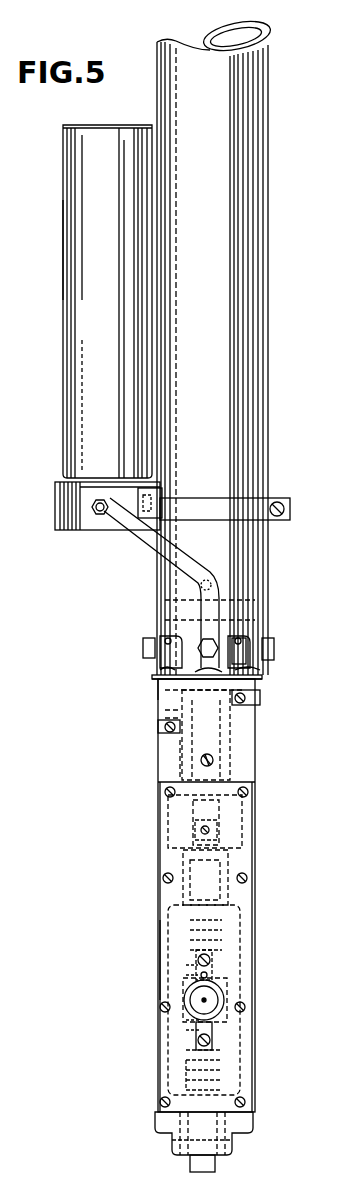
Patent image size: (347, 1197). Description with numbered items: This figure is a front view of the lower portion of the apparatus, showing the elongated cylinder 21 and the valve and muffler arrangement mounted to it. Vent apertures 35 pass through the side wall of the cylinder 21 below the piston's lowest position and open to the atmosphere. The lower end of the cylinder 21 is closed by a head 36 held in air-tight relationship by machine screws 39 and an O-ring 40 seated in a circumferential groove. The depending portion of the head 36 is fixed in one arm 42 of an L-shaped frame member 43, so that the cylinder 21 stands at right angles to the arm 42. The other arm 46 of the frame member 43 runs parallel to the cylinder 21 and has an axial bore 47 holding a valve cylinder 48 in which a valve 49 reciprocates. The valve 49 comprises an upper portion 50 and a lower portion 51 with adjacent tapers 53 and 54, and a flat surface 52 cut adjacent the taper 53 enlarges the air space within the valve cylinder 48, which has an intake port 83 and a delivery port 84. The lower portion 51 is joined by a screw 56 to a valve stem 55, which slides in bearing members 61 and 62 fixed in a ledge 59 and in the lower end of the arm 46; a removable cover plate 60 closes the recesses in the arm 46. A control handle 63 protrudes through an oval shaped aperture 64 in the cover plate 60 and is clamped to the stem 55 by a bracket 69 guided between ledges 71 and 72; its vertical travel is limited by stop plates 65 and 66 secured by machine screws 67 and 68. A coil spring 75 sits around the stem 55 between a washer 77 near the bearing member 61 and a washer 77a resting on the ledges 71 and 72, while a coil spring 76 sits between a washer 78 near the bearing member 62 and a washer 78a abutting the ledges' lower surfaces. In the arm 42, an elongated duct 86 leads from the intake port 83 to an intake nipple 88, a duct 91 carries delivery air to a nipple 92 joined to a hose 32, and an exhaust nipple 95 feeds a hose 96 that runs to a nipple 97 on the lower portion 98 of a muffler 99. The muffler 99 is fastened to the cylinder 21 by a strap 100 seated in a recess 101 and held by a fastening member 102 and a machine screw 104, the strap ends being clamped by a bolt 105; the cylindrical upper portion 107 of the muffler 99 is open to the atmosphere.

The elongated cylinder 21 is at (268, 276).
The hose 32 is at (165, 655).
The vent apertures 35 is at (265, 585).
The head 36 is at (262, 618).
The machine screws 39 is at (143, 645).
The O-ring 40 is at (150, 610).
The arm 42 is at (255, 770).
The L-shaped frame member 43 is at (152, 745).
The arm 46 is at (155, 1120).
The axial bore 47 is at (175, 770).
The valve cylinder 48 is at (155, 718).
The valve 49 is at (185, 690).
The upper portion 50 is at (200, 705).
The lower portion 51 is at (205, 810).
The flat surface 52 is at (215, 738).
The taper 53 is at (210, 720).
The taper 54 is at (250, 788).
The valve stem 55 is at (225, 945).
The screw 56 is at (195, 830).
The ledge 59 is at (232, 893).
The cover plate 60 is at (160, 935).
The bearing member 61 is at (185, 890).
The bearing member 62 is at (172, 1145).
The control handle 63 is at (222, 1008).
The oval shaped aperture 64 is at (160, 1012).
The stop plate 65 is at (200, 952).
The stop plate 66 is at (195, 1028).
The machine screw 67 is at (198, 968).
The machine screw 68 is at (212, 1045).
The bracket 69 is at (226, 993).
The ledge 71 is at (185, 1015).
The ledge 72 is at (222, 975).
The coil spring 75 is at (225, 918).
The coil spring 76 is at (185, 1065).
The washer 77 is at (180, 915).
The washer 77a is at (160, 975).
The washer 78 is at (225, 1075).
The washer 78a is at (222, 1035).
The intake port 83 is at (150, 690).
The delivery port 84 is at (180, 740).
The elongated duct 86 is at (248, 655).
The intake nipple 88 is at (258, 680).
The duct 91 is at (152, 710).
The nipple 92 is at (155, 670).
The exhaust nipple 95 is at (230, 622).
The hose 96 is at (138, 540).
The nipple 97 is at (92, 512).
The lower portion 98 is at (80, 532).
The muffler 99 is at (60, 236).
The strap 100 is at (232, 510).
The recess 101 is at (142, 480).
The fastening member 102 is at (168, 495).
The machine screw 104 is at (130, 505).
The bolt 105 is at (283, 518).
The upper portion 107 is at (95, 148).